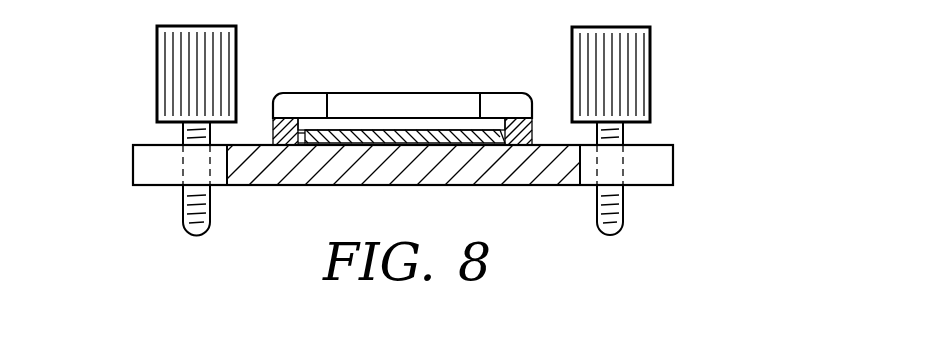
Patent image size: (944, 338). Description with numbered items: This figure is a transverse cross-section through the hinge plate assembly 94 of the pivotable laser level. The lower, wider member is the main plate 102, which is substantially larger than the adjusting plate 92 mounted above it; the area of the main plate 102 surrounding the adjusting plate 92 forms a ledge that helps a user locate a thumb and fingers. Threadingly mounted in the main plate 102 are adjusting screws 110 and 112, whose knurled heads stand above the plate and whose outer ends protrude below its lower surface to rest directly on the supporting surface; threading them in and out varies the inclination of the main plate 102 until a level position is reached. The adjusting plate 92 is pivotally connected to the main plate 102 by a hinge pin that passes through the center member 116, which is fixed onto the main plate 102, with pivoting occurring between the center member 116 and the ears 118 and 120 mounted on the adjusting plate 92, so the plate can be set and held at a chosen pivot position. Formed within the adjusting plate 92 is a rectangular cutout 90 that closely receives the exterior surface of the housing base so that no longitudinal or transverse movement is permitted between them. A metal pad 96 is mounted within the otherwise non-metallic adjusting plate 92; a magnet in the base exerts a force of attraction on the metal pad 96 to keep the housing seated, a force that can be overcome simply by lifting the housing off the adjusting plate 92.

The hinge plate assembly 94 is at (676, 160).
The main plate 102 is at (248, 178).
The adjusting screw 112 is at (176, 62).
The adjusting screw 110 is at (632, 68).
The center member 116 is at (395, 100).
The ear 120 is at (303, 105).
The ear 118 is at (505, 102).
The adjusting plate 92 is at (528, 132).
The metal pad 96 is at (338, 130).
The cutout 90 is at (500, 122).